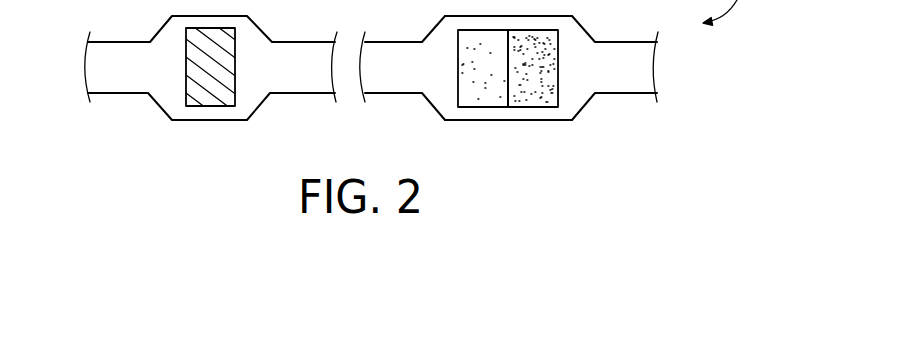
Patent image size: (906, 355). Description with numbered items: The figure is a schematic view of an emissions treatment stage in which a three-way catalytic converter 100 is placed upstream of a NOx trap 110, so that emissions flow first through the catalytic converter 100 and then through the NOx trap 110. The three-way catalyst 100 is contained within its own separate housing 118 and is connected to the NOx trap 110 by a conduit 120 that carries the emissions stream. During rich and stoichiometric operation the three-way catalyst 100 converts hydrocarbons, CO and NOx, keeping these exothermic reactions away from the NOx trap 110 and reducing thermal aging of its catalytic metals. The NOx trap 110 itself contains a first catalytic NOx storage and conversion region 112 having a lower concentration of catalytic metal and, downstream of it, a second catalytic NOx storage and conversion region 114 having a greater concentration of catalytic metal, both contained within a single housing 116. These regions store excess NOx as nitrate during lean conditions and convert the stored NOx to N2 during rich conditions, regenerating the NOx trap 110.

The three-way catalytic converter 100 is at (211, 85).
The housing 118 is at (208, 121).
The NOx trap 110 is at (512, 81).
The conduit 120 is at (368, 95).
The first catalytic NOx storage and conversion region 112 is at (463, 103).
The second catalytic NOx storage and conversion region 114 is at (536, 104).
The housing 116 is at (594, 98).